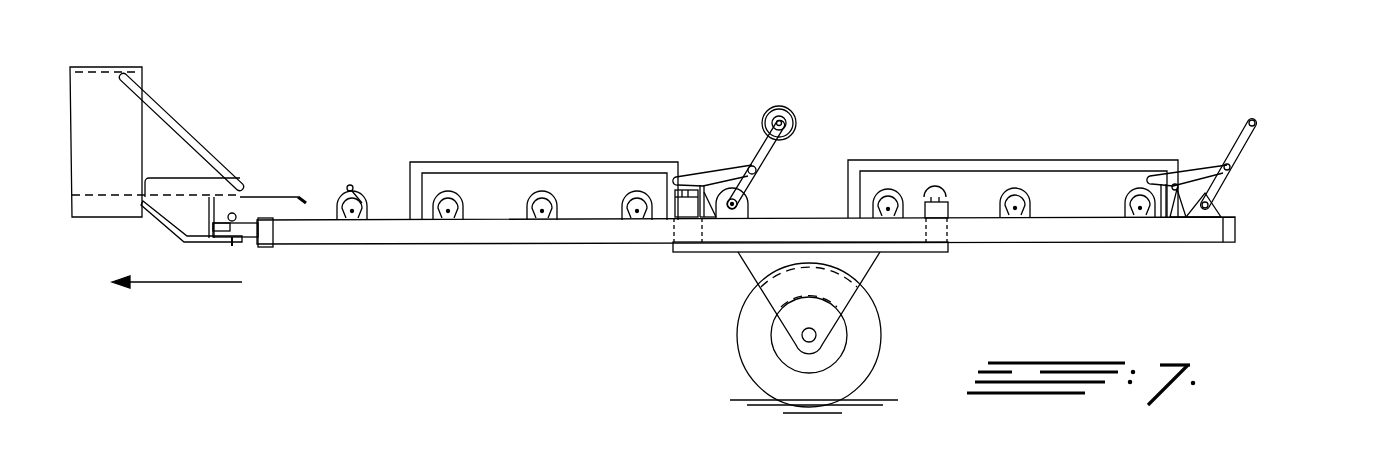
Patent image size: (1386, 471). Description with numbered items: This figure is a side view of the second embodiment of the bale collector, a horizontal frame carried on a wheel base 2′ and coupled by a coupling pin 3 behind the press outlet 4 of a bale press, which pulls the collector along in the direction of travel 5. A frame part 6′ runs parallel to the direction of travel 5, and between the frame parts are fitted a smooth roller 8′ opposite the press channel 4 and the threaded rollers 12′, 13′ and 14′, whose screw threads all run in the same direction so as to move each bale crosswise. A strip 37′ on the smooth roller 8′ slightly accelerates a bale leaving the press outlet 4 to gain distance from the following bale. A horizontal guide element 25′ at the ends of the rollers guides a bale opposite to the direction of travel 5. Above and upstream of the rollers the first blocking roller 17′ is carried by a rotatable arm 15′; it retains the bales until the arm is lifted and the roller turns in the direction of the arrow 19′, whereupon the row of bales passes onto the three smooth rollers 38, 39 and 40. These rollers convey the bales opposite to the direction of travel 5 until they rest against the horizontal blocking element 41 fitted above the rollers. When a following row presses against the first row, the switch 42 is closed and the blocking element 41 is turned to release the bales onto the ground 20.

The wheel base 2′ is at (758, 263).
The coupling pin 3 is at (236, 213).
The press outlet 4 is at (103, 83).
The direction of travel 5 is at (170, 282).
The frame part 6′ is at (470, 237).
The smooth roller 8′ is at (363, 190).
The threaded roller 12′ is at (460, 187).
The threaded roller 13′ is at (560, 187).
The threaded roller 14′ is at (632, 190).
The rotatable arm 15′ is at (757, 153).
The blocking roller 17′ is at (795, 117).
The arrow 19′ is at (812, 160).
The ground 20 is at (882, 398).
The guide element 25′ is at (517, 162).
The strip 37′ is at (349, 185).
The smooth roller 38 is at (885, 193).
The smooth roller 39 is at (1028, 198).
The smooth roller 40 is at (1132, 192).
The blocking element 41 is at (1257, 120).
The switch 42 is at (952, 202).